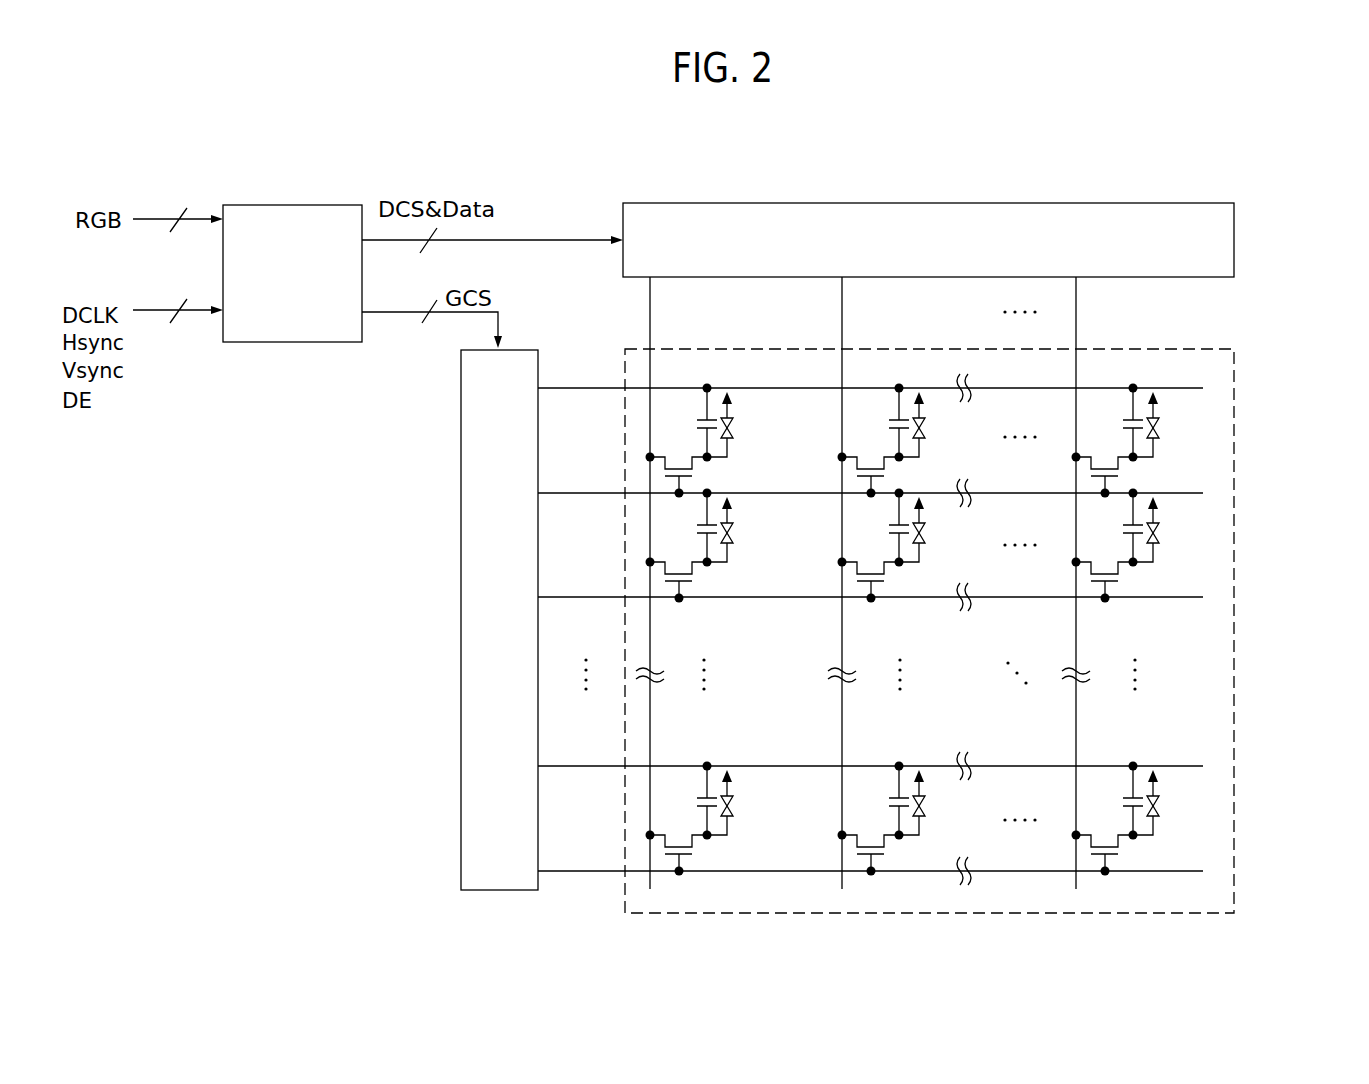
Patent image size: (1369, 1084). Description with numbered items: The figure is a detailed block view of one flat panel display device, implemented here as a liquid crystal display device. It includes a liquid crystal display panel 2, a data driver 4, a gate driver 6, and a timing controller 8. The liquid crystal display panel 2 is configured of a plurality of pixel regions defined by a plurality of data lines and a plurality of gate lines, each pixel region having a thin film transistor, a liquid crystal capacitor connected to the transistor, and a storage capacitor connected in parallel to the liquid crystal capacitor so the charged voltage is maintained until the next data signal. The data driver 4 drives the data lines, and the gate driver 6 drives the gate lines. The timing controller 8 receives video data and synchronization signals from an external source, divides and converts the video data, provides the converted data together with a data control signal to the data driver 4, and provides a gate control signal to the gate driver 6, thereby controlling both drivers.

The liquid crystal display panel 2 is at (1235, 670).
The data driver 4 is at (1235, 238).
The gate driver 6 is at (461, 617).
The timing controller 8 is at (330, 342).